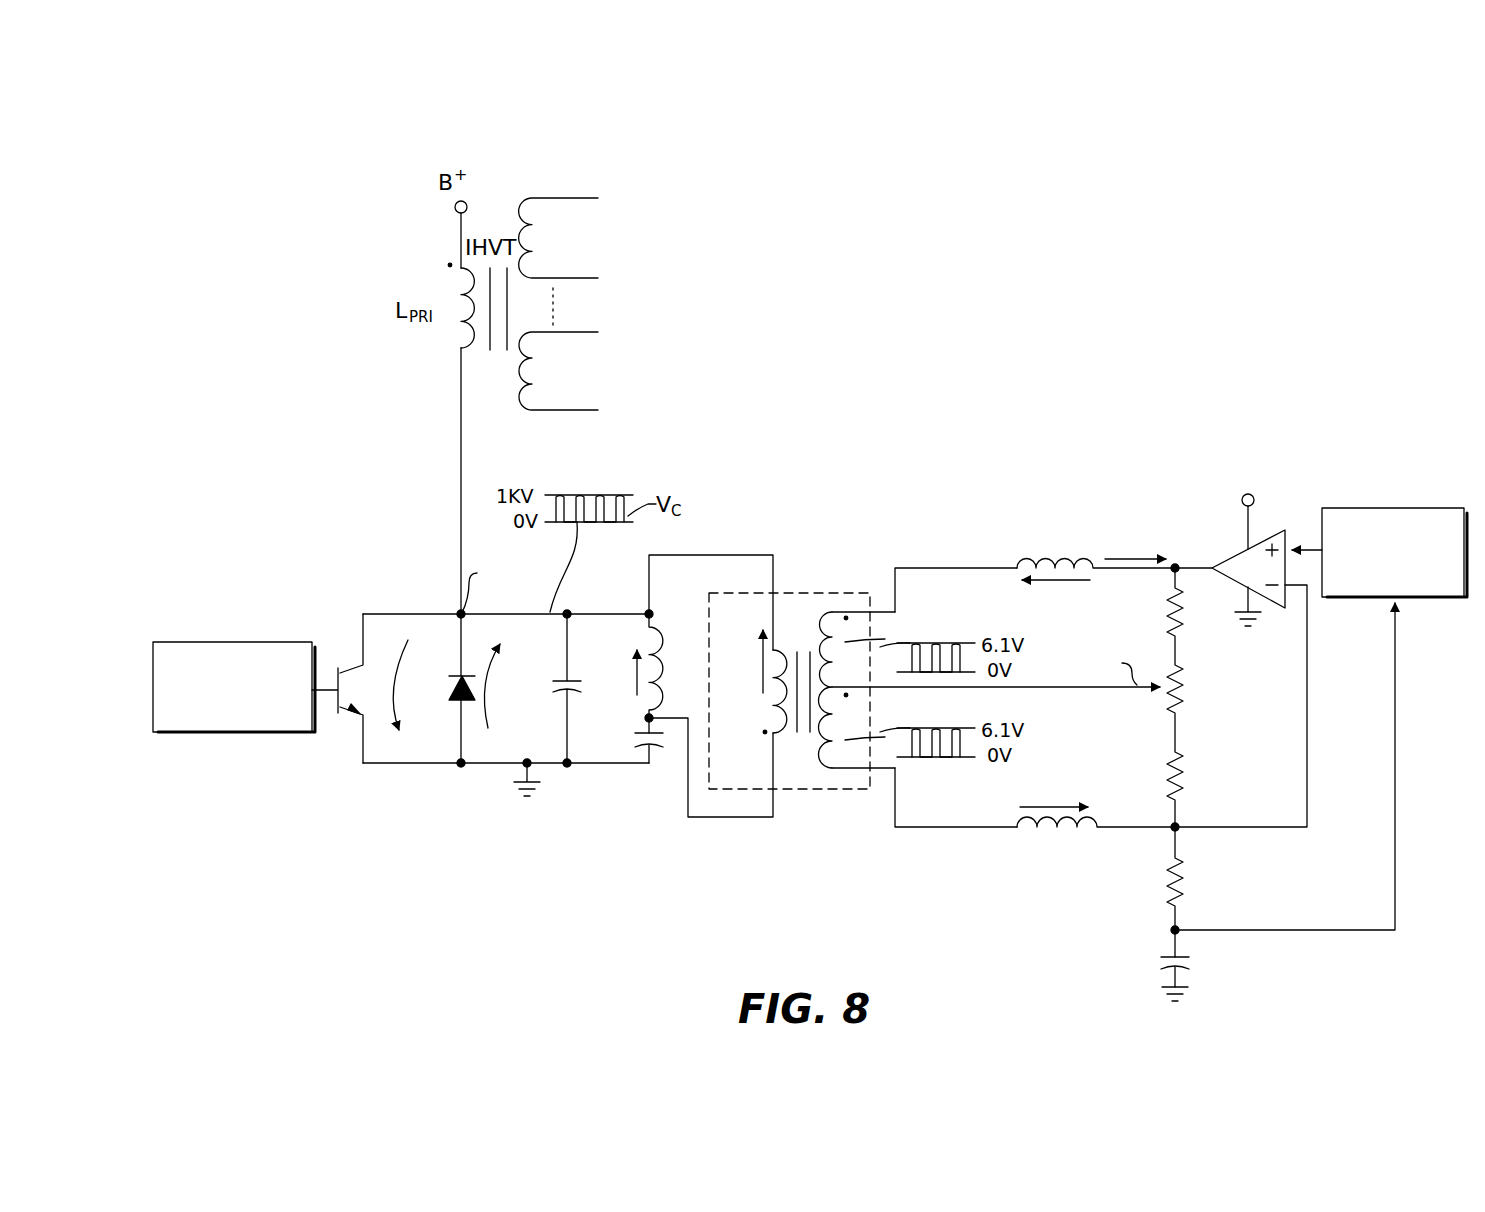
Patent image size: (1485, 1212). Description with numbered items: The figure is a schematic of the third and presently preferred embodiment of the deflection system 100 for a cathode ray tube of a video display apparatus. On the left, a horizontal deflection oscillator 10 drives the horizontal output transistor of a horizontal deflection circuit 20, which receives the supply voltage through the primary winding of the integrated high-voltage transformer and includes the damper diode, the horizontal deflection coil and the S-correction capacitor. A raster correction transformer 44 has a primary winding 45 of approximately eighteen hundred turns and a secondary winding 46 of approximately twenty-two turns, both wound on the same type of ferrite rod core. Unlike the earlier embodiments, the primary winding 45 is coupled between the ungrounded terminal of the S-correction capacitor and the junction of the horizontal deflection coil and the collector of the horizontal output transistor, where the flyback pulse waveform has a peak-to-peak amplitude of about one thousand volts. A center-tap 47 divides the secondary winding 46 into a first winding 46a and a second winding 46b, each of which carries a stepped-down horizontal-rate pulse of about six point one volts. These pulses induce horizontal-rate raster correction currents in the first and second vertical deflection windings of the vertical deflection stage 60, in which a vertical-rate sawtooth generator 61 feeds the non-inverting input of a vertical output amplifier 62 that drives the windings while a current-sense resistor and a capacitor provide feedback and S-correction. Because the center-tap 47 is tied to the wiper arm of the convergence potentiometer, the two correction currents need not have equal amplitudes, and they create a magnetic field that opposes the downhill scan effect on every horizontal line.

The horizontal deflection oscillator 10 is at (258, 642).
The horizontal deflection circuit 20 is at (425, 599).
The deflection system 100 is at (957, 423).
The raster correction transformer 44 is at (830, 594).
The primary winding 45 is at (775, 697).
The secondary winding 46 is at (826, 613).
The first winding 46a is at (840, 650).
The second winding 46b is at (840, 735).
The center-tap 47 is at (1038, 690).
The vertical deflection amplifier stage 60 is at (1148, 508).
The vertical-rate sawtooth generator 61 is at (1413, 508).
The vertical output amplifier 62 is at (1228, 557).